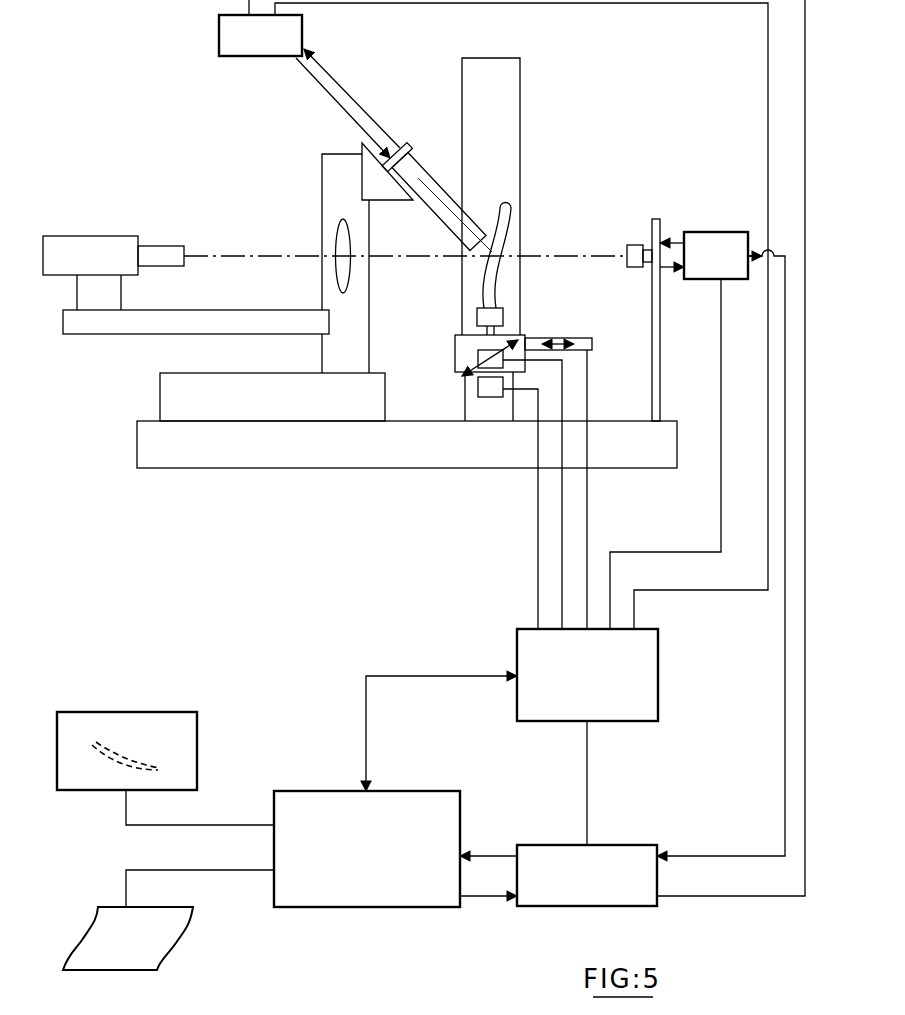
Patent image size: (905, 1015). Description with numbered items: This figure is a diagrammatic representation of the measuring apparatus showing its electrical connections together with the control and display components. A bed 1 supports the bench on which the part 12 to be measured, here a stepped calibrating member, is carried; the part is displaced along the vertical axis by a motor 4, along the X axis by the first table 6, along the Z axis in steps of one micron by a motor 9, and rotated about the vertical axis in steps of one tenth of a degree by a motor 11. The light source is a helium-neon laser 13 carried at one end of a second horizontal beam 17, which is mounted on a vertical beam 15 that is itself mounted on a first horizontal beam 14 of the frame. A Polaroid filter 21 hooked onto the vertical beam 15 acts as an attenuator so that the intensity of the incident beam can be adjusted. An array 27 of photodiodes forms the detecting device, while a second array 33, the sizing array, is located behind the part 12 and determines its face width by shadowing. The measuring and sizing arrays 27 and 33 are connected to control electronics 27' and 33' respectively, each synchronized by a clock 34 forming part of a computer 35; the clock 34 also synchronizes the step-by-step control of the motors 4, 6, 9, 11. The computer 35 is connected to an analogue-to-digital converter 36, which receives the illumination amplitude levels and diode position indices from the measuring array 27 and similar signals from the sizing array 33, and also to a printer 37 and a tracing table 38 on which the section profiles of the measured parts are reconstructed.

The bed 1 is at (407, 444).
The motor 4 is at (487, 388).
The first table 6 is at (482, 358).
The motor 9 is at (532, 343).
The motor 11 is at (488, 320).
The part to be measured 12 is at (494, 252).
The helium-neon laser 13 is at (113, 273).
The first horizontal beam 14 is at (272, 397).
The vertical beam 15 is at (367, 258).
The second horizontal beam 17 is at (196, 322).
The Polaroid filter 21 is at (343, 250).
The array of photodiodes 27 is at (437, 176).
The control electronics 27' is at (309, 86).
The second array of photodiodes 33 is at (628, 313).
The control electronics 33' is at (716, 255).
The clock 34 is at (587, 675).
The computer 35 is at (367, 849).
The analogue-to-digital converter 36 is at (587, 875).
The printer 37 is at (128, 938).
The tracing table 38 is at (127, 751).